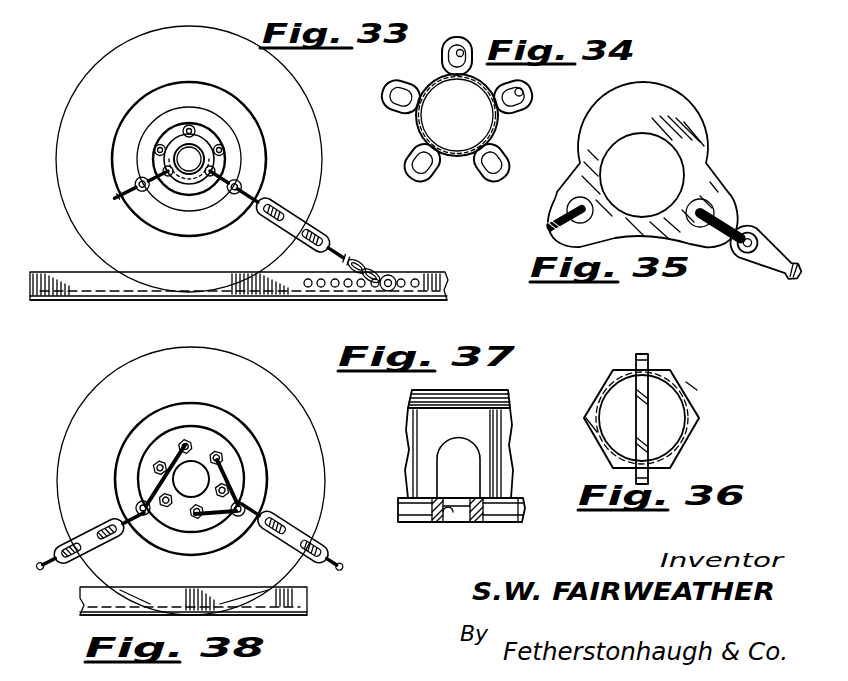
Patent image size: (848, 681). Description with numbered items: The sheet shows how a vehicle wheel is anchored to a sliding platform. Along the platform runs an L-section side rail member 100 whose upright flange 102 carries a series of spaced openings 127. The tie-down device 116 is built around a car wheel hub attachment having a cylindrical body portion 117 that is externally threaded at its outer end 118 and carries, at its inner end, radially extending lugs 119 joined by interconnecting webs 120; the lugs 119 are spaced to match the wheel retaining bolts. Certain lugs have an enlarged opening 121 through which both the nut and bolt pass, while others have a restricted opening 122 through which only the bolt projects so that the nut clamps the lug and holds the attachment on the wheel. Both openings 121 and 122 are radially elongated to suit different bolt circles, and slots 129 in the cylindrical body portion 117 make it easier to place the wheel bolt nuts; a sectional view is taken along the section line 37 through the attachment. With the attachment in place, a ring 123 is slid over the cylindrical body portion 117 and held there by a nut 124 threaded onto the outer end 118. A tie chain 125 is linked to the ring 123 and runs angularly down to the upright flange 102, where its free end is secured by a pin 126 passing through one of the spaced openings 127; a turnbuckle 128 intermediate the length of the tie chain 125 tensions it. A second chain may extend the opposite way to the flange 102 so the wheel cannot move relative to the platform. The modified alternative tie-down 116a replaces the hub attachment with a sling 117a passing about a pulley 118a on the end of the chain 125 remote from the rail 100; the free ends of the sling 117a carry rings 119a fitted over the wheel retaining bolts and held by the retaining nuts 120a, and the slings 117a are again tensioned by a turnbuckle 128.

In FIG. 33, the side rail member 100 is at (457, 294).
In FIG. 38, the side rail member 100 is at (319, 610).
In FIG. 33, the upright flange 102 is at (432, 278).
In FIG. 38, the upright flange 102 is at (312, 598).
In FIG. 33, the tie-down device 116 is at (261, 189).
In FIG. 38, the alternative tie-down 116a is at (280, 498).
In FIG. 33, the cylindrical body portion 117 is at (206, 142).
In FIG. 34, the cylindrical body portion 117 is at (472, 92).
In FIG. 37, the cylindrical body portion 117 is at (498, 432).
In FIG. 38, the sling 117a is at (140, 462).
In FIG. 37, the outer end 118 is at (512, 398).
In FIG. 38, the pulley 118a is at (143, 500).
In FIG. 33, the lugs 119 is at (189, 125).
In FIG. 34, the lugs 119 is at (447, 48).
In FIG. 37, the lugs 119 is at (478, 524).
In FIG. 38, the rings 119a is at (180, 440).
In FIG. 33, the interconnecting webs 120 is at (218, 138).
In FIG. 34, the interconnecting webs 120 is at (496, 80).
In FIG. 37, the interconnecting webs 120 is at (522, 508).
In FIG. 38, the retaining nuts 120a is at (226, 446).
In FIG. 34, the enlarged opening 121 is at (524, 92).
In FIG. 34, the restricted opening 122 is at (470, 46).
In FIG. 37, the restricted opening 122 is at (447, 521).
In FIG. 33, the ring 123 is at (152, 160).
In FIG. 35, the ring 123 is at (690, 137).
In FIG. 36, the nut 124 is at (690, 418).
In FIG. 33, the tie chain 125 is at (147, 196).
In FIG. 35, the tie chain 125 is at (752, 228).
In FIG. 38, the tie chain 125 is at (244, 518).
In FIG. 33, the pin 126 is at (391, 275).
In FIG. 33, the spaced openings 127 is at (354, 290).
In FIG. 33, the turnbuckle 128 is at (310, 230).
In FIG. 38, the turnbuckle 128 is at (85, 530).
In FIG. 37, the slots 129 is at (440, 456).
In FIG. 34, the section line 37 is at (520, 156).